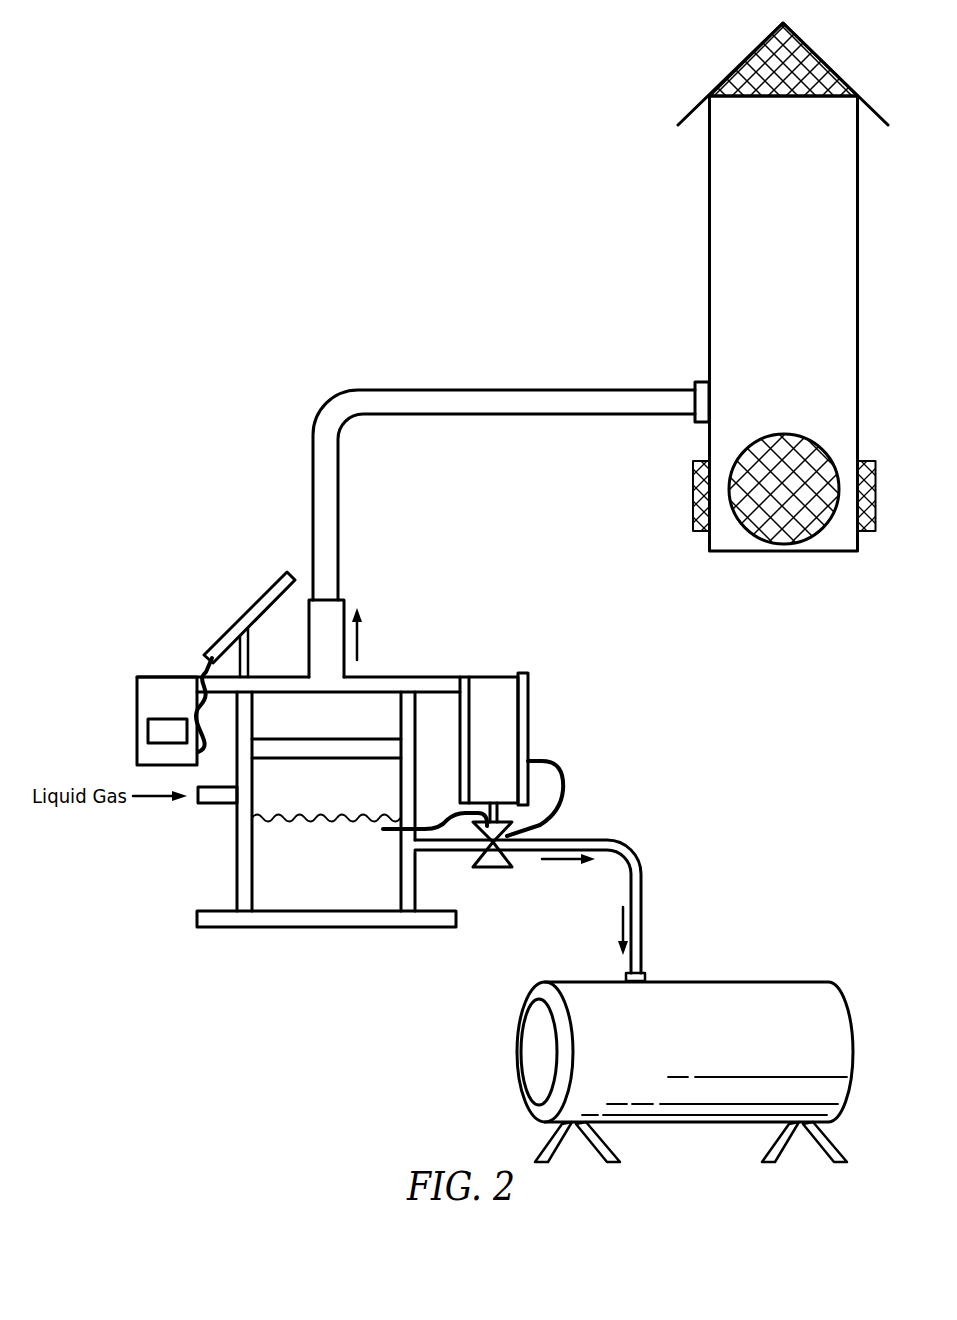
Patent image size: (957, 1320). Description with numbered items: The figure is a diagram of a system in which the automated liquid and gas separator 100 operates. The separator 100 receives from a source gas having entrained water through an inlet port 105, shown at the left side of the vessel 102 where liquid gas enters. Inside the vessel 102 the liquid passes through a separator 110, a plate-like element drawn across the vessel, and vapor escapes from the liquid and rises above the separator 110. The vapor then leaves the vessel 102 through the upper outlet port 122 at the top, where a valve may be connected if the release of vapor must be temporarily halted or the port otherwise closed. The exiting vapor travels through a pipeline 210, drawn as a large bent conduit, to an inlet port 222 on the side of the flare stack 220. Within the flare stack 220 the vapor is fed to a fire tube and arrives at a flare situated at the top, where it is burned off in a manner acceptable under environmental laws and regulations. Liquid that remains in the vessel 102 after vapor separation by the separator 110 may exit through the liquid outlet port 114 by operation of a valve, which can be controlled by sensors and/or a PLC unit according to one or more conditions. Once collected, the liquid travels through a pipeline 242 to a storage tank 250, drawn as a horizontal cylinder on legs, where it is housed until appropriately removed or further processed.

The automated liquid and gas separator 100 is at (170, 594).
The vessel 102 is at (344, 877).
The inlet port 105 is at (217, 805).
The separator 110 is at (315, 760).
The liquid outlet port 114 is at (448, 853).
The upper outlet port 122 is at (359, 637).
The pipeline 210 is at (420, 390).
The flare stack 220 is at (704, 177).
The inlet port 222 is at (695, 382).
The pipeline 242 is at (627, 847).
The storage tank 250 is at (758, 972).